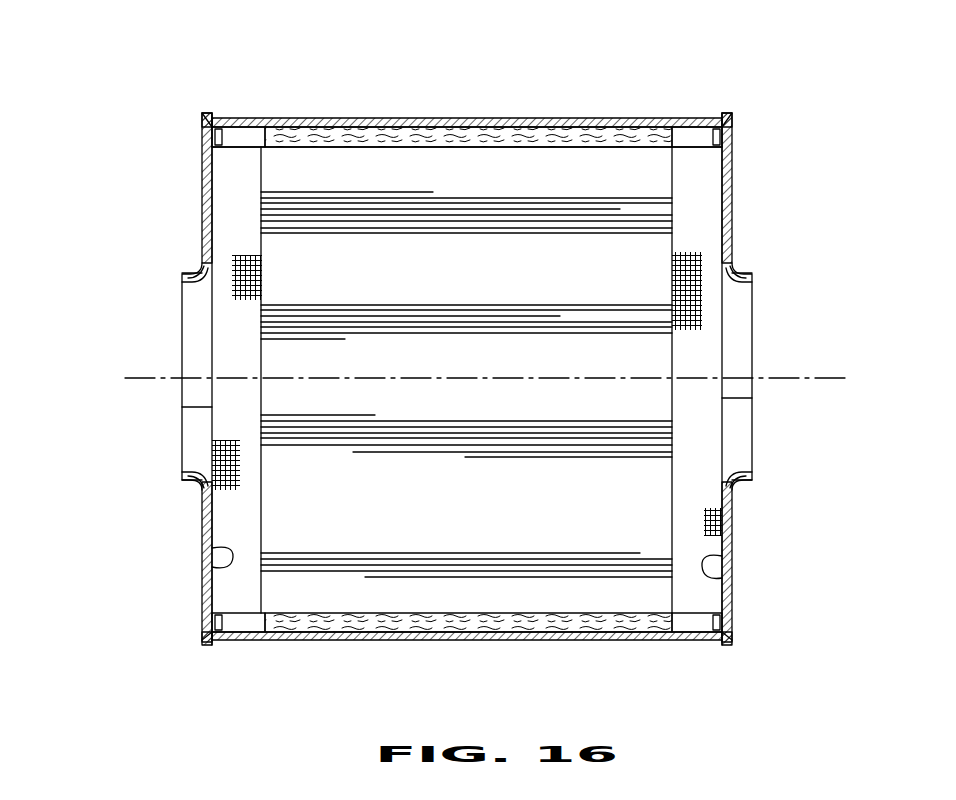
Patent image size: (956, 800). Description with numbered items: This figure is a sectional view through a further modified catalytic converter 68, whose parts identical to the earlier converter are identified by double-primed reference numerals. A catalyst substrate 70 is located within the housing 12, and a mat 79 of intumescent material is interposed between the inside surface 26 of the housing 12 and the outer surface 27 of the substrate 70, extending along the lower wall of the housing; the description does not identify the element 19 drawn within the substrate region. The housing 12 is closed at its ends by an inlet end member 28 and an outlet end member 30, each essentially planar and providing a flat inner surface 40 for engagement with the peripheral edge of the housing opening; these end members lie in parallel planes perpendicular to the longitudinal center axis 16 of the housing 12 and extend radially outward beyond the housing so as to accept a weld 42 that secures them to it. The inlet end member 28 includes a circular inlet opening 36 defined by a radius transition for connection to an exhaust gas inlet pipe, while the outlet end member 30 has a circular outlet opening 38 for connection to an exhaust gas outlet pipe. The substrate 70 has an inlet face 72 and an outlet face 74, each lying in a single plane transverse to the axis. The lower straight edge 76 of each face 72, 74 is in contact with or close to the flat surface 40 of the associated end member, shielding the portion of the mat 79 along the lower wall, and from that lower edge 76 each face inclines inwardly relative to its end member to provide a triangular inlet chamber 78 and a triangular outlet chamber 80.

The catalytic converter 68 is at (580, 88).
The mat of intumescent material 79 is at (428, 138).
The housing 12 is at (462, 116).
The weld 42 is at (218, 114).
The inside surface of the housing 26 is at (700, 136).
The heat transfer fins 19 is at (348, 210).
The inlet end member 28 is at (198, 205).
The outlet end member 30 is at (740, 204).
The inlet chamber 78 is at (230, 328).
The outlet chamber 80 is at (710, 357).
The longitudinal center axis 16 is at (160, 376).
The lower straight edge 76 is at (182, 407).
The inlet face 72 is at (224, 426).
The outlet face 74 is at (686, 416).
The circular inlet opening 36 is at (190, 462).
The circular outlet opening 38 is at (736, 462).
The flat inner surface 40 is at (222, 568).
The catalyst substrate 70 is at (484, 614).
The outer surface of the substrate 27 is at (681, 613).